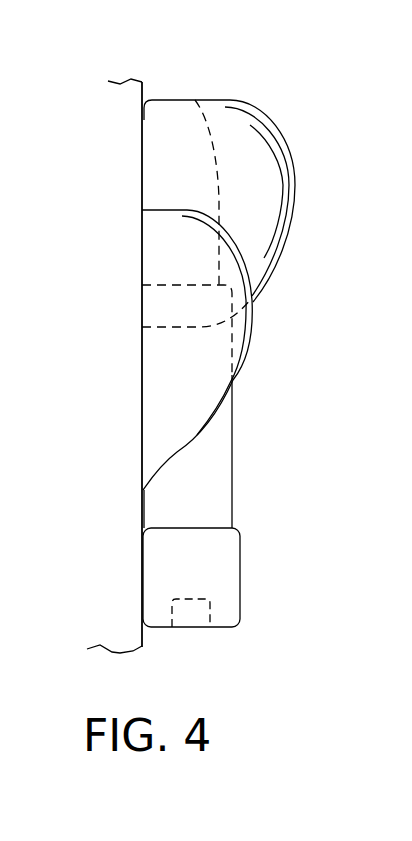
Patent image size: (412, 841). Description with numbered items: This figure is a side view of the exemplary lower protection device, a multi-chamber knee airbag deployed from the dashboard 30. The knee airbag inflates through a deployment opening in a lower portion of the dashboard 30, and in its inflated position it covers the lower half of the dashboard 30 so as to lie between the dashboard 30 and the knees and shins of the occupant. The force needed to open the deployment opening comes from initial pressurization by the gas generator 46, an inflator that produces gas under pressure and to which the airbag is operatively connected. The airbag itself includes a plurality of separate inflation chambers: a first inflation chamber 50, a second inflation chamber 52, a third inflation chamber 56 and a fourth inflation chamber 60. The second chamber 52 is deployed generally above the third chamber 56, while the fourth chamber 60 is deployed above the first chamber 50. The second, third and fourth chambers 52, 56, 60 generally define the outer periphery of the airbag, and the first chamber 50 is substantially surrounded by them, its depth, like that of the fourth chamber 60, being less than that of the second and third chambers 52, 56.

The dashboard 30 is at (142, 342).
The gas generator 46 is at (225, 562).
The first inflation chamber 50 is at (224, 460).
The second inflation chamber 52 is at (272, 181).
The third inflation chamber 56 is at (240, 337).
The fourth inflation chamber 60 is at (168, 107).